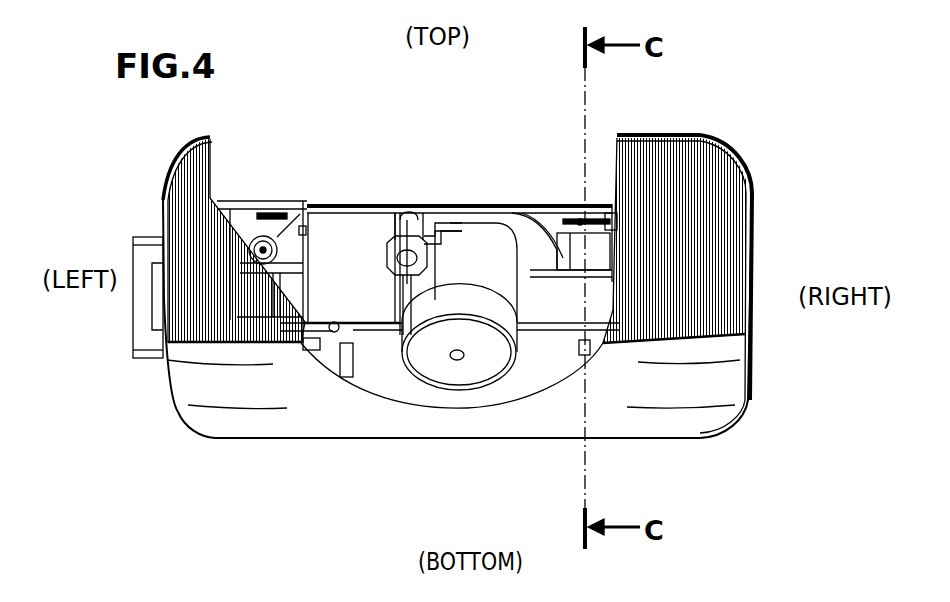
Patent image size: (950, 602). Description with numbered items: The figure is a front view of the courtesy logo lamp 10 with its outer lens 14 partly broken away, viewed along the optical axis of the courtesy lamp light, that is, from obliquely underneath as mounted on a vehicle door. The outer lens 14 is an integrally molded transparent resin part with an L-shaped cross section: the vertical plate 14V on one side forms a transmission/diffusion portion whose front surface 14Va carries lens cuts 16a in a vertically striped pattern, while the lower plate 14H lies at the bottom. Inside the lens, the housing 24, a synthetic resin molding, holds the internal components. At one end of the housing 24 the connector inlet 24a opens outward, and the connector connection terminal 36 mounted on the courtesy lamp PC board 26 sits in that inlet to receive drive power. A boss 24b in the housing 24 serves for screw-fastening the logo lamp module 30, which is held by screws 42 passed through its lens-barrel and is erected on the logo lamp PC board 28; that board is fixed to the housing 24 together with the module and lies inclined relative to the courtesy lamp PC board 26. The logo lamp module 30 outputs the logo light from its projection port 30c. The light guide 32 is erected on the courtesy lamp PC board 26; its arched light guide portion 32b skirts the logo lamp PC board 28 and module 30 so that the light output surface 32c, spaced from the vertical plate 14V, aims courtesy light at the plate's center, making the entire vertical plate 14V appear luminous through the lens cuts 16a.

The courtesy logo lamp 10 is at (667, 108).
The outer lens 14 is at (755, 253).
The lower plate 14H is at (290, 393).
The vertical plate 14V is at (687, 210).
The front surface 14Va is at (688, 233).
The lens cuts 16a is at (670, 203).
The housing 24 is at (379, 201).
The connector inlet 24a is at (147, 298).
The boss 24b is at (413, 218).
The courtesy lamp PC board 26 is at (377, 333).
The logo lamp PC board 28 is at (340, 243).
The logo lamp module 30 is at (467, 260).
The projection port 30c is at (457, 362).
The light guide 32 is at (593, 247).
The light guide portion 32b is at (577, 220).
The light output surface 32c is at (527, 222).
The connector connection terminal 36 is at (303, 320).
The screw 42 is at (376, 260).